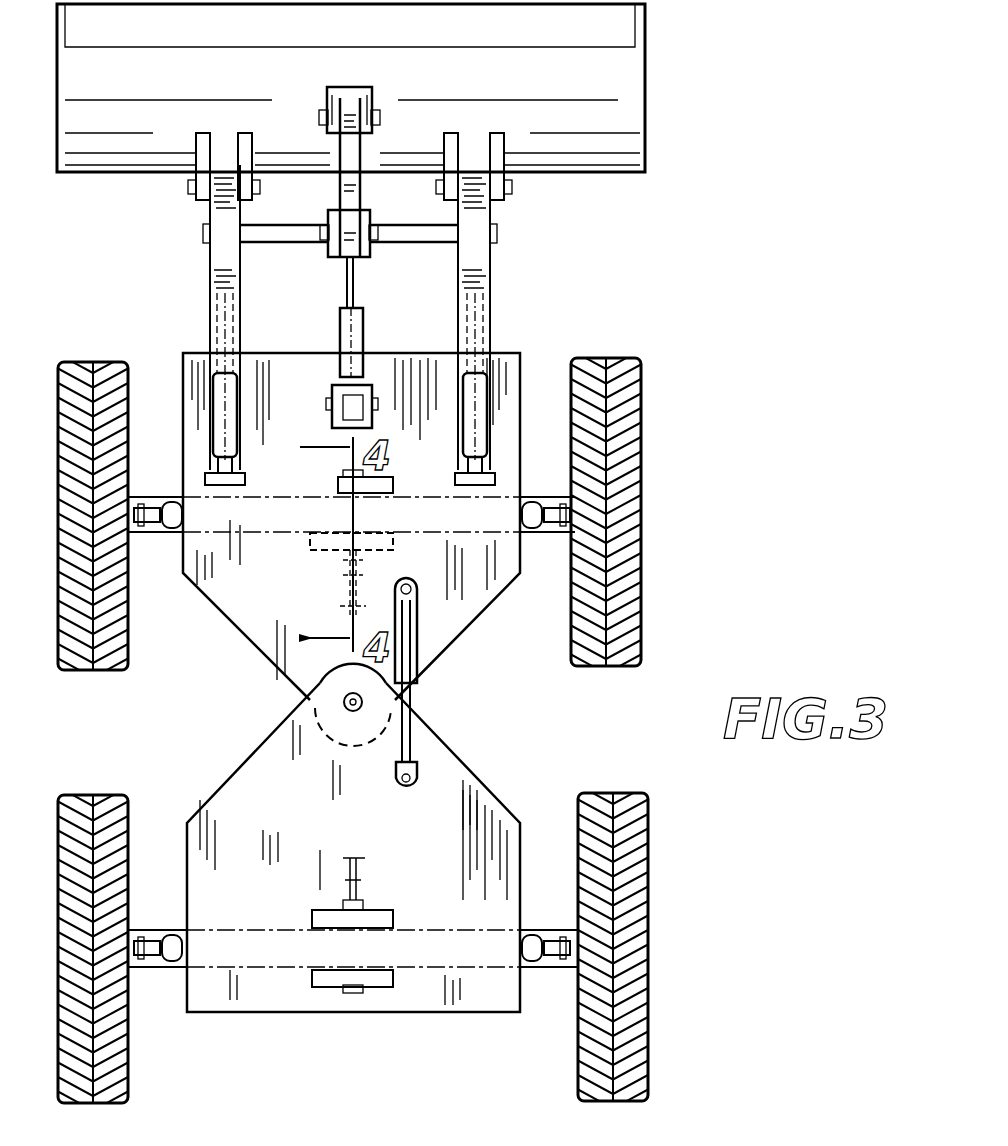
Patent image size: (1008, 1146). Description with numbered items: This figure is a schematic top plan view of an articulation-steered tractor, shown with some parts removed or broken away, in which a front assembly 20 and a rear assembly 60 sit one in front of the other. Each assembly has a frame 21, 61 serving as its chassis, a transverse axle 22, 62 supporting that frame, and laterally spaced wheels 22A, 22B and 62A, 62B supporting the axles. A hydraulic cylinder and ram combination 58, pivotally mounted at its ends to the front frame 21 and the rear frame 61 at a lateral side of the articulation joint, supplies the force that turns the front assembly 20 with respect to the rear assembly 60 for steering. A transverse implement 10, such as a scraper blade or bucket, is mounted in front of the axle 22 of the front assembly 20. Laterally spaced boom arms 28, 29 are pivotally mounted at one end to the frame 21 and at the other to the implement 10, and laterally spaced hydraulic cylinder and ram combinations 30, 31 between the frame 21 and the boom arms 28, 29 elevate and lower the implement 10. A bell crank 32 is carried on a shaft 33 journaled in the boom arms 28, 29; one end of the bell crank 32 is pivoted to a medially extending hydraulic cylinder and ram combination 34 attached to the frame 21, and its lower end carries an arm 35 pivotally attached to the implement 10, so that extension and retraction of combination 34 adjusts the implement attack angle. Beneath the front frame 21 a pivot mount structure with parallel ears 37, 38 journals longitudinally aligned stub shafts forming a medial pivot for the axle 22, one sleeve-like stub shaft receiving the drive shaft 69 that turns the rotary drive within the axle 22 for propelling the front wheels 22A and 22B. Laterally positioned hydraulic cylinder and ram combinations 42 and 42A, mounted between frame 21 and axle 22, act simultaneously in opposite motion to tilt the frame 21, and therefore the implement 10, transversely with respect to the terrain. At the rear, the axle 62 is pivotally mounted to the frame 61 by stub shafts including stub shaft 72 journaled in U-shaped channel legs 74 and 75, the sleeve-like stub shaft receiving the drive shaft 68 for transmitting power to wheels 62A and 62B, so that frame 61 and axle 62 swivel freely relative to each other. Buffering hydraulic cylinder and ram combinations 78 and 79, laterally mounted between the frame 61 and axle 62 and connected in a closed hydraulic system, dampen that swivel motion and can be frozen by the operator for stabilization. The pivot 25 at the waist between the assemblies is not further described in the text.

The transverse implement 10 is at (625, 107).
The front assembly 20 is at (654, 589).
The frame 21 is at (285, 601).
The axle 22 is at (168, 497).
The wheel 22A is at (615, 366).
The wheel 22B is at (88, 366).
The pivot 25 is at (344, 702).
The boom arm 28 is at (487, 268).
The boom arm 29 is at (215, 268).
The hydraulic cylinder and ram combination 30 is at (487, 420).
The hydraulic cylinder and ram combination 31 is at (215, 420).
The bell crank 32 is at (345, 247).
The cross bar 33 is at (277, 243).
The hydraulic cylinder and ram combination 34 is at (360, 332).
The arm 35 is at (353, 157).
The ear 37 is at (337, 486).
The ear 38 is at (393, 540).
The hydraulic cylinder and ram combination 42 is at (530, 540).
The hydraulic cylinder and ram combination 42A is at (180, 540).
The hydraulic cylinder and ram combination 58 is at (420, 660).
The rear assembly 60 is at (656, 1003).
The frame 61 is at (300, 813).
The axle 62 is at (160, 930).
The wheel 62A is at (637, 1078).
The wheel 62B is at (117, 1075).
The drive shaft 68 is at (362, 886).
The drive shaft 69 is at (348, 595).
The stub shaft 72 is at (350, 993).
The U-shaped channel leg 74 is at (395, 980).
The U-shaped channel leg 75 is at (312, 918).
The hydraulic cylinder and ram combination 78 is at (532, 960).
The hydraulic cylinder and ram combination 79 is at (170, 962).